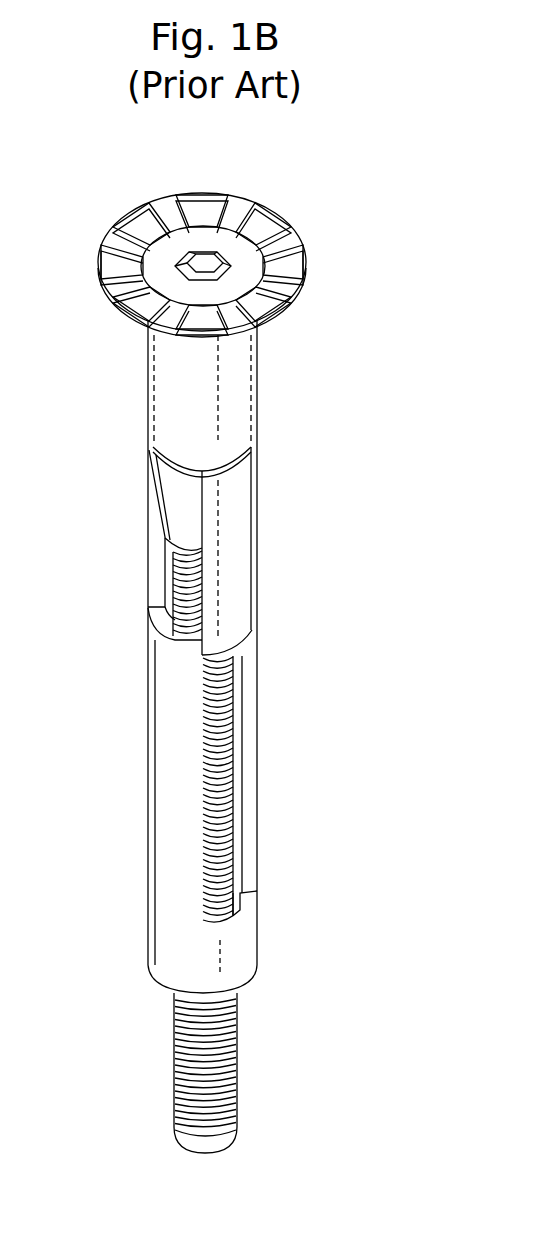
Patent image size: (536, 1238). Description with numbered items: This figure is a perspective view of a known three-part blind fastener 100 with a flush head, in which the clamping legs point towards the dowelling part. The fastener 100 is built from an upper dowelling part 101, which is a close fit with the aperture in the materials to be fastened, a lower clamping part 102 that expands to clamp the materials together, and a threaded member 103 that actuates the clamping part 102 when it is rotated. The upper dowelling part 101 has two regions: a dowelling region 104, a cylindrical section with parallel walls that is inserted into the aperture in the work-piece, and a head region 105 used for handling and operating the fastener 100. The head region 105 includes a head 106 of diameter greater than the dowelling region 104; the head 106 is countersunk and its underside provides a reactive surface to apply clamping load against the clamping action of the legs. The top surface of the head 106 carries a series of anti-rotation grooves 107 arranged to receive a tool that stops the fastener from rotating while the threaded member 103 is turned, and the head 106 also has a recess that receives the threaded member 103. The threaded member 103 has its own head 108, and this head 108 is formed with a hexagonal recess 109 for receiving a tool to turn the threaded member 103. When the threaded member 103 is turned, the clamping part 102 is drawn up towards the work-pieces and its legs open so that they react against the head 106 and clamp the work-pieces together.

The fastener 100 is at (333, 168).
The upper dowelling part 101 is at (175, 398).
The lower clamping part 102 is at (250, 790).
The threaded member 103 is at (187, 1058).
The dowelling region 104 is at (277, 323).
The head region 105 is at (86, 193).
The head 106 is at (211, 196).
The anti-rotation grooves 107 is at (165, 212).
The head of the threaded member 108 is at (232, 241).
The hexagonal recess 109 is at (215, 256).